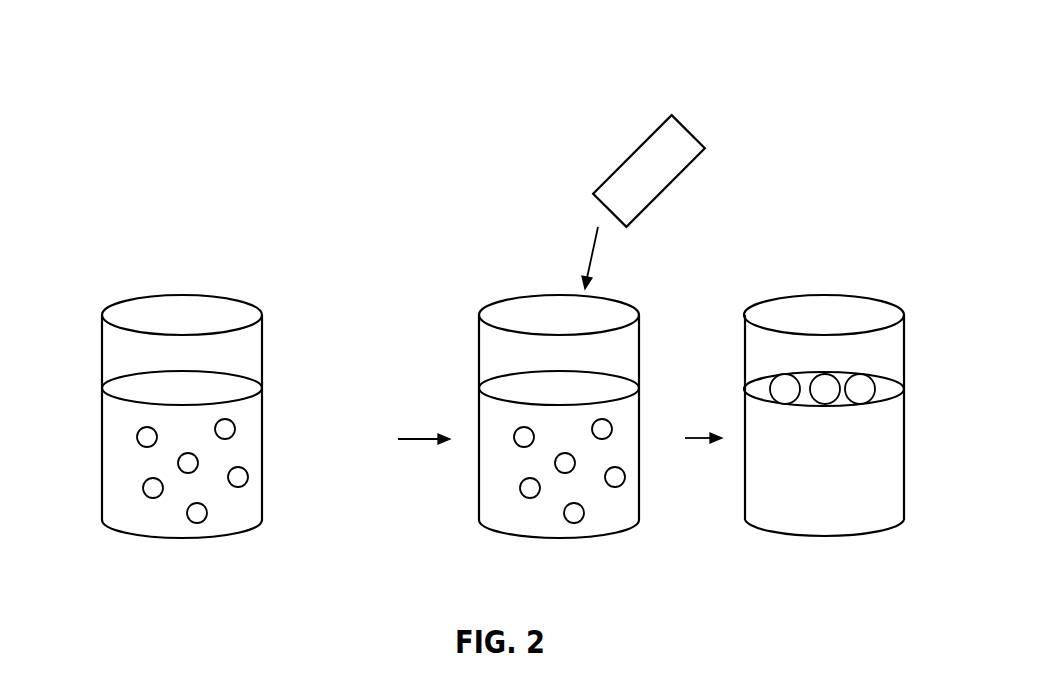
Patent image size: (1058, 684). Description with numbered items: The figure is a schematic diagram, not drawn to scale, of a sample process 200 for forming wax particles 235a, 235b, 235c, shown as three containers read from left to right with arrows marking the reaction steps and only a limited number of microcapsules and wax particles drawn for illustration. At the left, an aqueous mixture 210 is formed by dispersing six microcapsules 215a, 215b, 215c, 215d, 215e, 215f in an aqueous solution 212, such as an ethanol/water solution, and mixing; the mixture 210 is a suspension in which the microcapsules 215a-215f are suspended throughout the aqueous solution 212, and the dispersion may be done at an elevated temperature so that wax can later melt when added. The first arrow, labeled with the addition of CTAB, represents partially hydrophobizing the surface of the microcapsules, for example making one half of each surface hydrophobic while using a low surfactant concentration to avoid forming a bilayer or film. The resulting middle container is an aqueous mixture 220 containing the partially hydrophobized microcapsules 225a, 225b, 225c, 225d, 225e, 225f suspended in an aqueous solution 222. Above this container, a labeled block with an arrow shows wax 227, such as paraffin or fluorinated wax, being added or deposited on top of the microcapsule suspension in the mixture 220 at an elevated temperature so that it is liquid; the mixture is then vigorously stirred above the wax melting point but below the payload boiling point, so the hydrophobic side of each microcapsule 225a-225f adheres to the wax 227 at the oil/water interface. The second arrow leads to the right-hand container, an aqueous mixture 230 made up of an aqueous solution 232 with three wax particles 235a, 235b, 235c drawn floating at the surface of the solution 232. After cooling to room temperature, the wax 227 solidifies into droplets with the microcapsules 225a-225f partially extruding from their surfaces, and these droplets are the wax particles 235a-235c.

The process 200 is at (859, 84).
The aqueous mixture 210 is at (182, 295).
The aqueous solution 212 is at (127, 466).
The microcapsule 215a is at (140, 430).
The microcapsule 215b is at (151, 498).
The microcapsule 215c is at (198, 523).
The microcapsule 215d is at (245, 484).
The microcapsule 215e is at (233, 424).
The microcapsule 215f is at (188, 453).
The aqueous mixture 220 is at (559, 295).
The aqueous solution 222 is at (504, 466).
The partially hydrophobized microcapsule 225a is at (517, 430).
The partially hydrophobized microcapsule 225b is at (528, 498).
The partially hydrophobized microcapsule 225c is at (575, 523).
The partially hydrophobized microcapsule 225d is at (622, 484).
The partially hydrophobized microcapsule 225e is at (610, 424).
The partially hydrophobized microcapsule 225f is at (565, 453).
The wax 227 is at (643, 202).
The aqueous mixture 230 is at (824, 295).
The aqueous solution 232 is at (762, 499).
The wax particle 235a is at (770, 385).
The wax particle 235b is at (826, 405).
The wax particle 235c is at (878, 392).